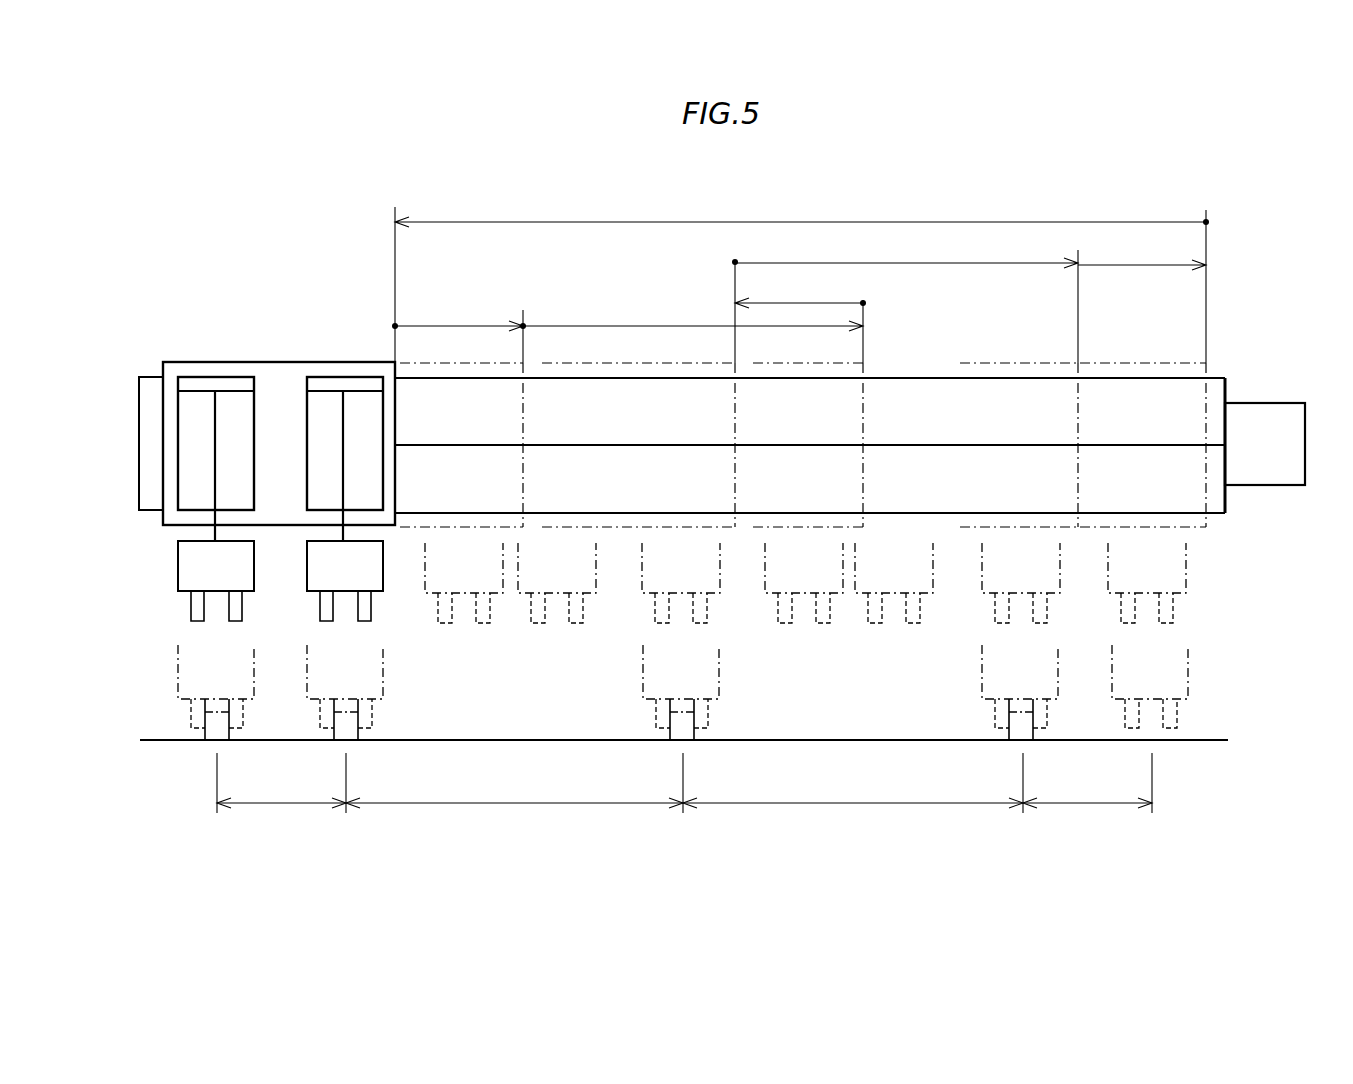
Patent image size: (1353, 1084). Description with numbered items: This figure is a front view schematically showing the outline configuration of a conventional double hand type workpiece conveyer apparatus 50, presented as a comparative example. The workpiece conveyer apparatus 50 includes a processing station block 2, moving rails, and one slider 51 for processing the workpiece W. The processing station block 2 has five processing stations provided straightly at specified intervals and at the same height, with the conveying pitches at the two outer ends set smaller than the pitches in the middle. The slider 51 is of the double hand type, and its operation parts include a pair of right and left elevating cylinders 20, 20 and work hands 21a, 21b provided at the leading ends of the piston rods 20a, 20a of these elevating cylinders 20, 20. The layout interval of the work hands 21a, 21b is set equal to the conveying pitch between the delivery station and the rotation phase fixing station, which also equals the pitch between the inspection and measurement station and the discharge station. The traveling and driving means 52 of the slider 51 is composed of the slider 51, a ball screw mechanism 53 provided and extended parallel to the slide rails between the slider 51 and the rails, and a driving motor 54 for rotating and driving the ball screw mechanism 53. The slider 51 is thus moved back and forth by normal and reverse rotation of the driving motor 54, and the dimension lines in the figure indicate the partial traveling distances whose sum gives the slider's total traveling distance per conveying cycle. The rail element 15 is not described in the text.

The workpiece conveyer apparatus 50 is at (221, 207).
The slider 51 is at (162, 348).
The elevating cylinder 20 is at (322, 366).
The piston rod 20a is at (215, 478).
The work hand 21a is at (186, 564).
The work hand 21b is at (313, 565).
The guide rail (slider 3,3) 15 is at (1214, 397).
The traveling and driving means 52 is at (1320, 558).
The ball screw mechanism 53 is at (1143, 447).
The driving motor 54 is at (1258, 470).
The processing station block 2 is at (1197, 848).
The workpiece W is at (205, 718).